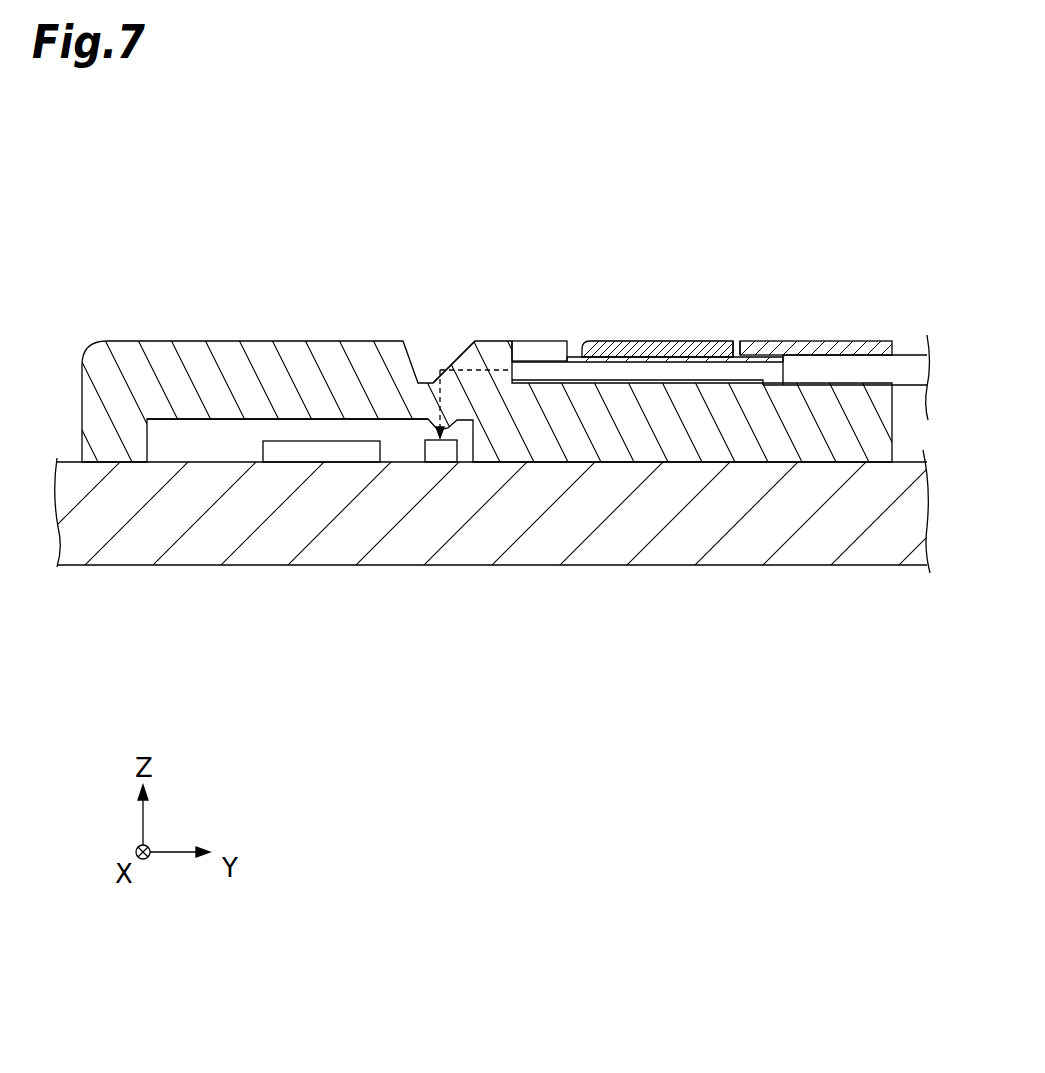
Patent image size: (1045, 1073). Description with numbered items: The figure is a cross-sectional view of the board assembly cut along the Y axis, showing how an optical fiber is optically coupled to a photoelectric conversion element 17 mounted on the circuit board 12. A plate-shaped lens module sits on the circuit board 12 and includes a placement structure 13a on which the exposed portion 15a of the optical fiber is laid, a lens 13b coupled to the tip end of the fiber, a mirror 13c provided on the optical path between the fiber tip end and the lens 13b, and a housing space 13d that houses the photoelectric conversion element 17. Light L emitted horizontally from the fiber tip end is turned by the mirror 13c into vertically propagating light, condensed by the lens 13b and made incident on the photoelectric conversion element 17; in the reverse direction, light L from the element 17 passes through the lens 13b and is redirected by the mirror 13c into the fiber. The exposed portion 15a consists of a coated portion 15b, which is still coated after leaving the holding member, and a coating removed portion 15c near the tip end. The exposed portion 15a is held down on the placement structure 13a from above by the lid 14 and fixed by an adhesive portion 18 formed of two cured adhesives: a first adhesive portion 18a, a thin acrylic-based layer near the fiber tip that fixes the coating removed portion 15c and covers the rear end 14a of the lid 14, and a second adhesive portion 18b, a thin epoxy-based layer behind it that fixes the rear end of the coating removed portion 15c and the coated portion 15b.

The circuit board 12 is at (667, 545).
The placement structure 13a is at (553, 383).
The lens 13b is at (455, 421).
The mirror 13c is at (462, 358).
The housing space 13d is at (253, 423).
The lid 14 is at (663, 340).
The rear end of the lid 14a is at (743, 352).
The exposed portion 15a is at (731, 319).
The coated portion 15b is at (863, 368).
The coating removed portion 15c is at (718, 375).
The photoelectric conversion element 17 is at (438, 452).
The adhesive portion 18 is at (751, 335).
The first adhesive portion 18a is at (613, 340).
The second adhesive portion 18b is at (812, 348).
The light L is at (484, 370).